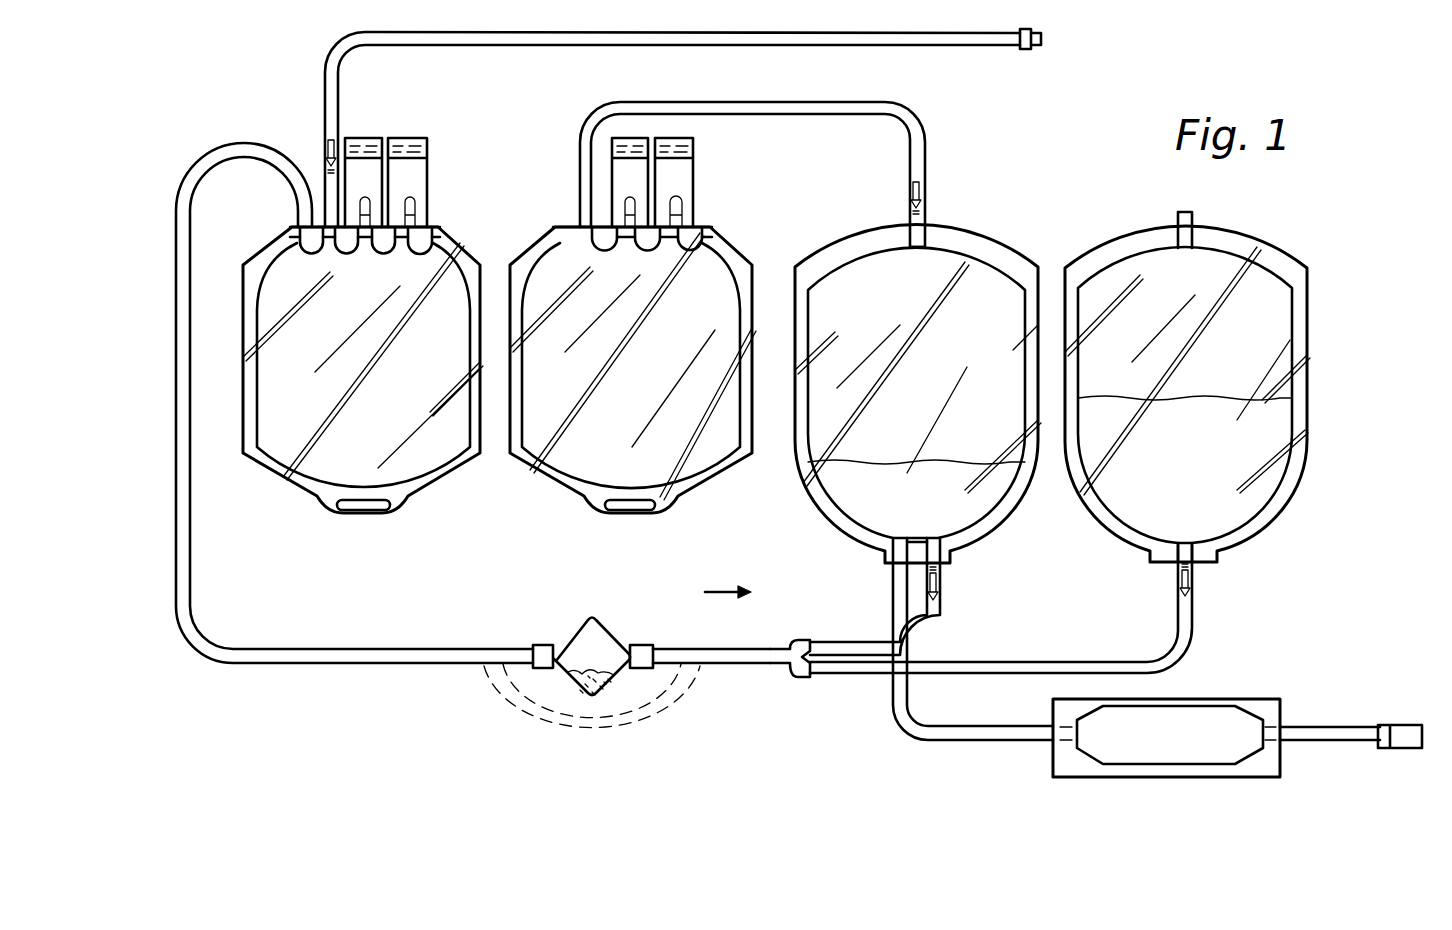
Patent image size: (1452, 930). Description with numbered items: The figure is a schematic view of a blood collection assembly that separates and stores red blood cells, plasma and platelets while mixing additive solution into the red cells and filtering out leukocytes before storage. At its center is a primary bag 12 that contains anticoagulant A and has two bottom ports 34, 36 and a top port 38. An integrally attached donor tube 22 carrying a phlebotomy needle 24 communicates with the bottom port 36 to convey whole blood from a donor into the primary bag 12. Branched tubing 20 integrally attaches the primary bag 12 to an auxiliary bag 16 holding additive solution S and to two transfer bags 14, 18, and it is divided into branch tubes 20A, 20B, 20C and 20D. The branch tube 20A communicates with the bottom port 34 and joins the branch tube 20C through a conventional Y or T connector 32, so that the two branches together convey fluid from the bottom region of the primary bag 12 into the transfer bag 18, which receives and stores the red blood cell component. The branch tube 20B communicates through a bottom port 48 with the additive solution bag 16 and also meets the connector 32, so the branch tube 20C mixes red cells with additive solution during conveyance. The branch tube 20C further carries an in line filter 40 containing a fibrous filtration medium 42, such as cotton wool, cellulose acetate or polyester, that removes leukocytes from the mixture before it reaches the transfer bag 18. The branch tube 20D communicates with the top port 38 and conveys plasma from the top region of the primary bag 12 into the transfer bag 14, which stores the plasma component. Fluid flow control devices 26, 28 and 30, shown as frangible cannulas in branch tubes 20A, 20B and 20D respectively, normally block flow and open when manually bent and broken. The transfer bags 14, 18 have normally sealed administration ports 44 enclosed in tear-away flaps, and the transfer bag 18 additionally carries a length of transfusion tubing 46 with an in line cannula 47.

The primary bag 12 is at (988, 297).
The transfer bag 14 is at (697, 298).
The auxiliary bag 16 is at (1267, 290).
The transfer bag 18 is at (427, 288).
The branched tubing 20 is at (705, 589).
The branch tube 20A is at (941, 622).
The branch tube 20B is at (1190, 645).
The branch tube 20C is at (424, 656).
The branch tube 20D is at (835, 106).
The donor tube 22 is at (972, 744).
The phlebotomy needle 24 is at (1386, 728).
The fluid flow control device 26 is at (936, 593).
The fluid flow control device 28 is at (1195, 601).
The fluid flow control device 30 is at (922, 192).
The connector 32 is at (797, 678).
The bottom port 34 is at (933, 540).
The bottom port 36 is at (900, 540).
The top port 38 is at (917, 249).
The in line filter 40 is at (609, 598).
The filtration medium 42 is at (592, 692).
The administration ports 44 is at (400, 137).
The transfusion tubing 46 is at (686, 40).
The in line cannula 47 is at (327, 146).
The bottom port 48 is at (1185, 543).